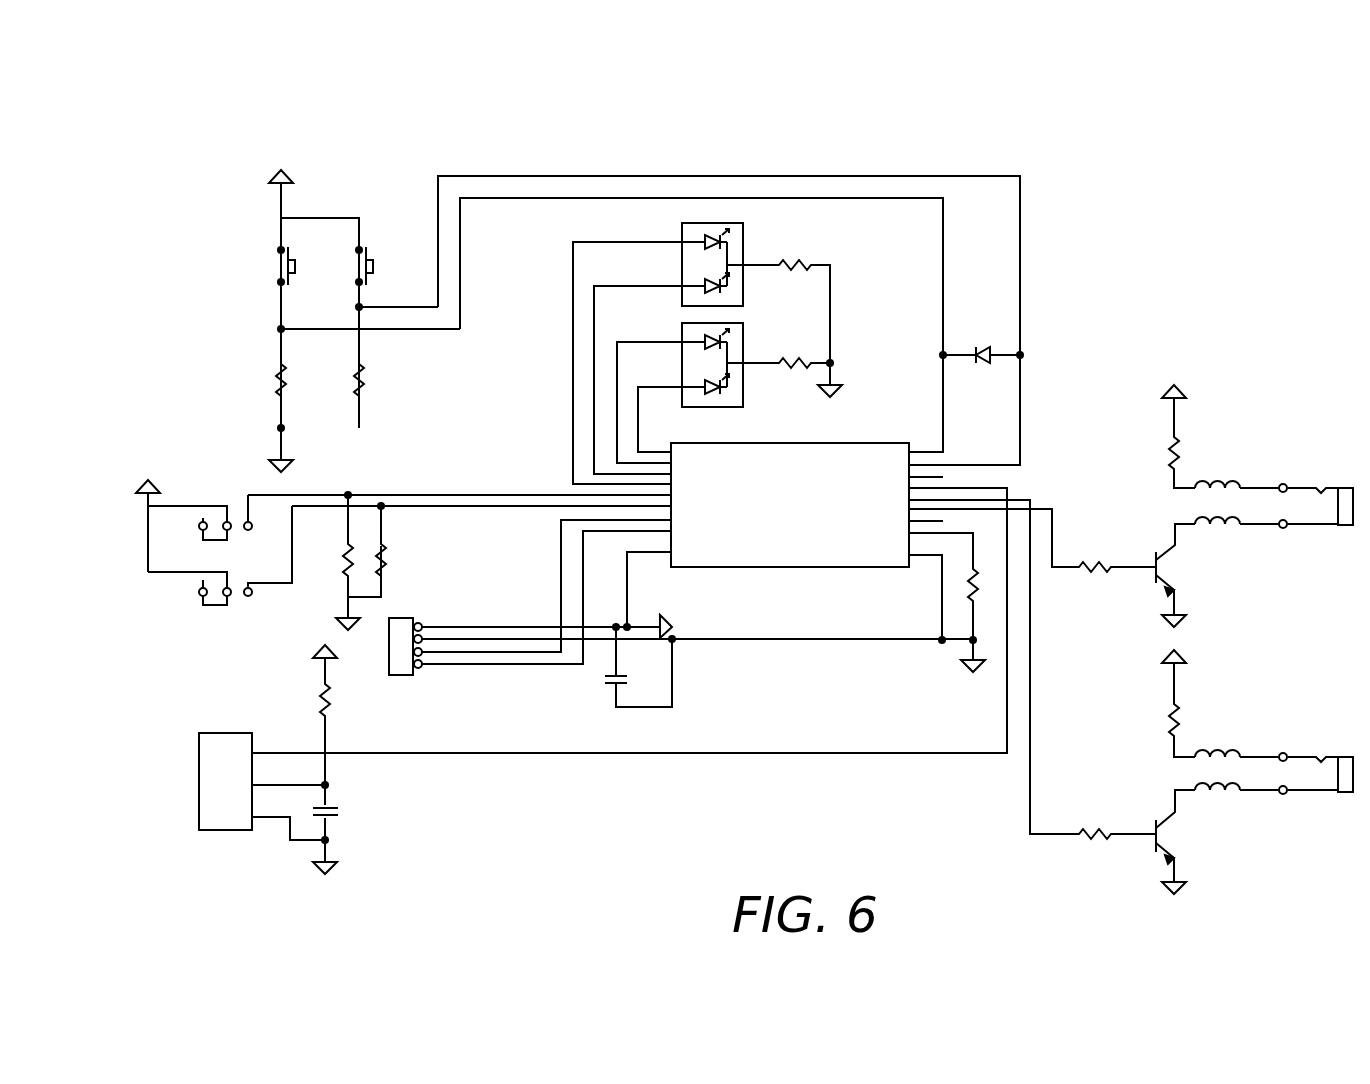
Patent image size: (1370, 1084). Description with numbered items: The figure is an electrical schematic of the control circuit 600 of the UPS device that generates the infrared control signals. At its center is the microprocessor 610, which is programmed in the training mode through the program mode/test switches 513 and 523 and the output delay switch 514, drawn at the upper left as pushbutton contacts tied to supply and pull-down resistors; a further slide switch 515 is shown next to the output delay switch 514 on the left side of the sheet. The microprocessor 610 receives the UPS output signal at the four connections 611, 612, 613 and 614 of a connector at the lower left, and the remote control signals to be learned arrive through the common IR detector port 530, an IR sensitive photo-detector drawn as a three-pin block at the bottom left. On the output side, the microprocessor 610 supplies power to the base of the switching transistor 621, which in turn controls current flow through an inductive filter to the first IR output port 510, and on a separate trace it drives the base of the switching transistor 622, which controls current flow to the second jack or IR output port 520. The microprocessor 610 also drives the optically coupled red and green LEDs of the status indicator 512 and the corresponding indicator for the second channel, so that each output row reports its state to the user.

The control circuit 600 is at (822, 138).
The IR output port 510 is at (1350, 487).
The LED indicator light 512 is at (740, 257).
The program mode/test switch 513 is at (278, 267).
The output delay switch 514 is at (235, 503).
The switch 515 is at (237, 605).
The IR output port 520 is at (1300, 795).
The program mode/test switch 523 is at (378, 267).
The IR detector port 530 is at (235, 832).
The microprocessor 610 is at (808, 568).
The connection 611 is at (412, 626).
The connection 612 is at (400, 637).
The connection 613 is at (412, 651).
The connection 614 is at (418, 670).
The switching transistor 621 is at (1168, 569).
The switching transistor 622 is at (1173, 835).